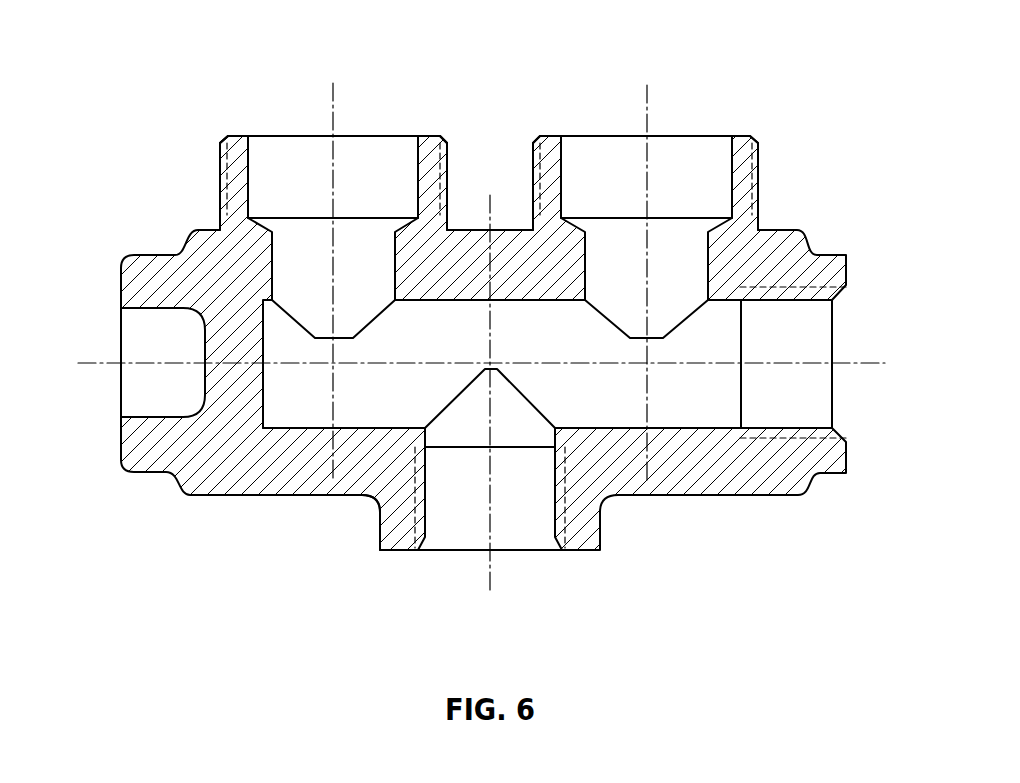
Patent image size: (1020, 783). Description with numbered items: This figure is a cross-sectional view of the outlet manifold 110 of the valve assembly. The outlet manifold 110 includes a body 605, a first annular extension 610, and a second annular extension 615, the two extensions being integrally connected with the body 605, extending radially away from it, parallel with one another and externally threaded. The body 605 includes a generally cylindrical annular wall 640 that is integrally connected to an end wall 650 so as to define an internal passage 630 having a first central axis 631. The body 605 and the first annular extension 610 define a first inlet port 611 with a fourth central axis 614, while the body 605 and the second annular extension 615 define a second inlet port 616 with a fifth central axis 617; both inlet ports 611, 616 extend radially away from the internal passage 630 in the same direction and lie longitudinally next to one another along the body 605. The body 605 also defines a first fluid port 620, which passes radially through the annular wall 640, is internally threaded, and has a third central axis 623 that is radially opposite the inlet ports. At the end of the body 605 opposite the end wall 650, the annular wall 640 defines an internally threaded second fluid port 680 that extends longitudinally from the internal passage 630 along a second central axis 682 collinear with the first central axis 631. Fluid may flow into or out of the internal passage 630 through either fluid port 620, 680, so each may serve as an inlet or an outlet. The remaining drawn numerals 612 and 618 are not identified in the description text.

The outlet manifold 110 is at (154, 76).
The body 605 is at (213, 280).
The first annular extension 610 is at (240, 158).
The first inlet port 611 is at (310, 192).
The first boss wall 612 is at (431, 136).
The fourth central axis 614 is at (333, 208).
The second annular extension 615 is at (744, 160).
The second inlet port 616 is at (622, 192).
The fifth central axis 617 is at (647, 208).
The second boss 618 is at (550, 136).
The first fluid port 620 is at (464, 515).
The third central axis 623 is at (492, 513).
The internal passage 630 is at (575, 417).
The first central axis 631 is at (612, 363).
The annular wall 640 is at (293, 429).
The end wall 650 is at (263, 375).
The second fluid port 680 is at (778, 341).
The second central axis 682 is at (765, 363).